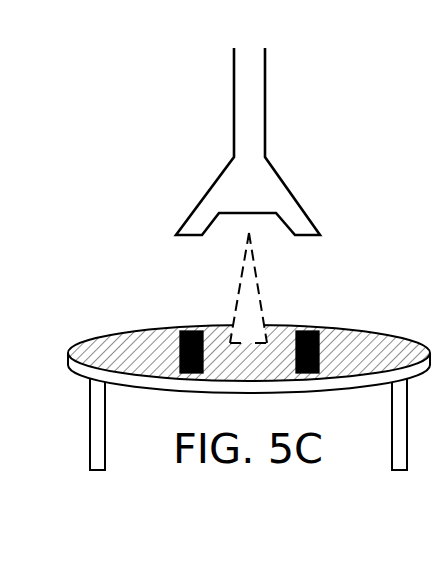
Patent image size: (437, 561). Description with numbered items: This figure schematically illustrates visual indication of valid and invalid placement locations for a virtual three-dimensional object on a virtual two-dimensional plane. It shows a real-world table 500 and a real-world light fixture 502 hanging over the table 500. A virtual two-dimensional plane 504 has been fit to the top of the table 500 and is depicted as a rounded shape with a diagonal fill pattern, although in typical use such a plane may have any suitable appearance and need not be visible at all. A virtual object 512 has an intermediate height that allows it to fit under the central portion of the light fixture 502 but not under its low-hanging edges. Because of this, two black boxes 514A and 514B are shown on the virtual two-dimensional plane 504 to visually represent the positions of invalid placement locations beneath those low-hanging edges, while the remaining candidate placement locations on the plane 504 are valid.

The real-world table 500 is at (68, 362).
The real-world light fixture 502 is at (265, 98).
The virtual two-dimensional plane 504 is at (338, 328).
The virtual object 512 is at (237, 295).
The black box 514A is at (187, 330).
The black box 514B is at (298, 330).